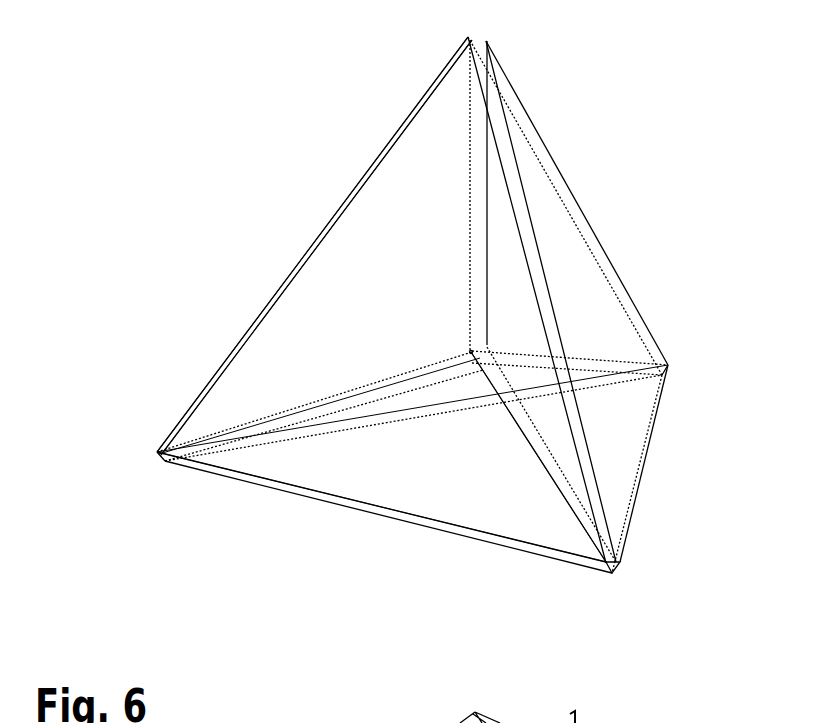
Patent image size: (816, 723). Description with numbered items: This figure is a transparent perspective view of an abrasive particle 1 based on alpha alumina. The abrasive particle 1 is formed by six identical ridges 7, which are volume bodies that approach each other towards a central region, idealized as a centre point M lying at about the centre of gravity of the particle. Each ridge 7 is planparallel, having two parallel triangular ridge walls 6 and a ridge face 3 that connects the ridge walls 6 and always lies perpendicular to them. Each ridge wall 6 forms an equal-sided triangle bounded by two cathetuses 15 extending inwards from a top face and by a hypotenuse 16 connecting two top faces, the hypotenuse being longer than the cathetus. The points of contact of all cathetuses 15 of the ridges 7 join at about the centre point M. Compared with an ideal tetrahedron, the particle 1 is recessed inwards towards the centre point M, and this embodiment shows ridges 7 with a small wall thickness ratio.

The abrasive particle 1 is at (507, 130).
The ridge face 3 is at (530, 237).
The ridge wall 6 is at (369, 255).
The ridge 7 is at (381, 174).
The cathetus 15 is at (542, 470).
The hypotenuse 16 is at (547, 265).
The centre point M is at (470, 352).